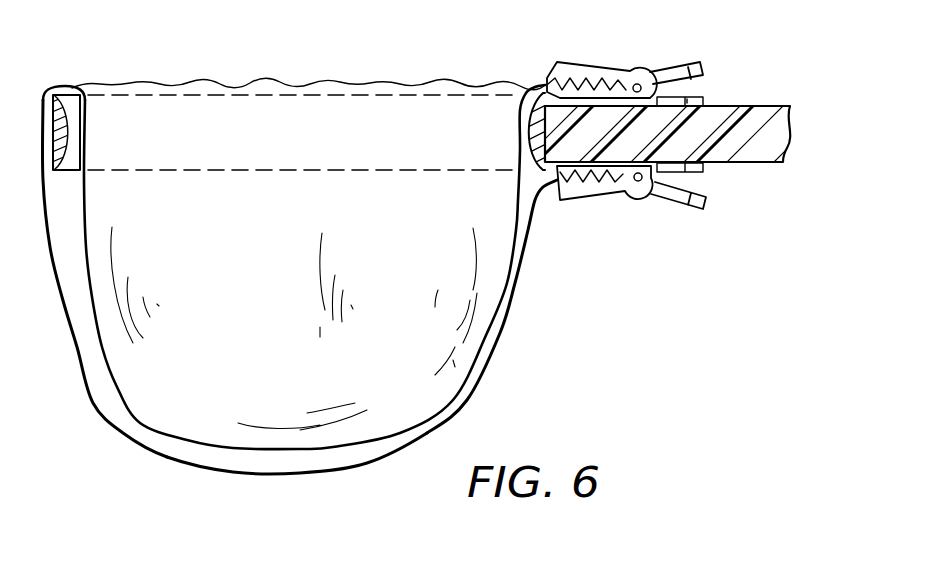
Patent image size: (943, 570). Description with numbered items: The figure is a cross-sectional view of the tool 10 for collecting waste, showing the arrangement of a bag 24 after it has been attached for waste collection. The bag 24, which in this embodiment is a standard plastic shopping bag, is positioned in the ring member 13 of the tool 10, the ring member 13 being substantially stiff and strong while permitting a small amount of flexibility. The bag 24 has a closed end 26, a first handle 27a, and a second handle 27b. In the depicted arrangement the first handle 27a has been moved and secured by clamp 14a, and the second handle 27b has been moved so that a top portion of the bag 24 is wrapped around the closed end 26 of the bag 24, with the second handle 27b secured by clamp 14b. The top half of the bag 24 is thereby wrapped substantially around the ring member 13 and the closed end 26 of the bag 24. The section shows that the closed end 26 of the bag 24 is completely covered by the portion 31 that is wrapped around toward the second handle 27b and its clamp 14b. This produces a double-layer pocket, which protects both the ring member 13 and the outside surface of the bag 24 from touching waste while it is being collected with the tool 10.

The tool 10 is at (559, 266).
The ring member 13 is at (63, 128).
The clamp 14a is at (700, 62).
The clamp 14b is at (707, 207).
The bag 24 is at (102, 360).
The closed end 26 is at (125, 433).
The first handle 27a is at (583, 82).
The second handle 27b is at (590, 185).
The portion 31 is at (208, 468).